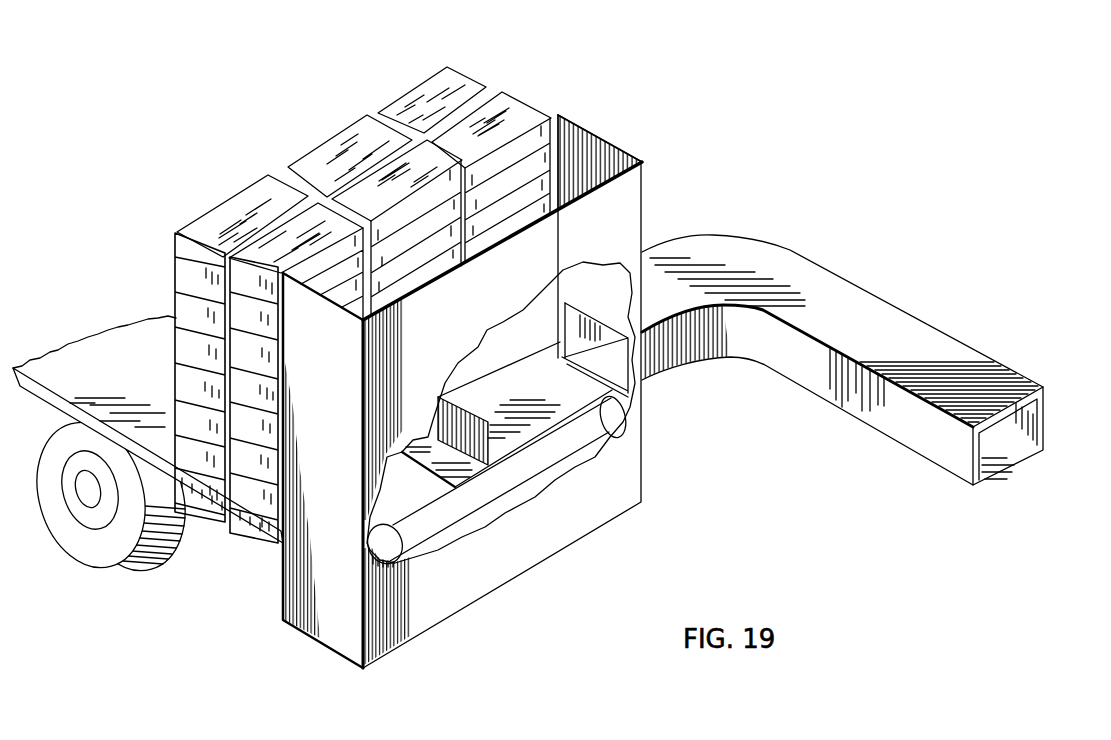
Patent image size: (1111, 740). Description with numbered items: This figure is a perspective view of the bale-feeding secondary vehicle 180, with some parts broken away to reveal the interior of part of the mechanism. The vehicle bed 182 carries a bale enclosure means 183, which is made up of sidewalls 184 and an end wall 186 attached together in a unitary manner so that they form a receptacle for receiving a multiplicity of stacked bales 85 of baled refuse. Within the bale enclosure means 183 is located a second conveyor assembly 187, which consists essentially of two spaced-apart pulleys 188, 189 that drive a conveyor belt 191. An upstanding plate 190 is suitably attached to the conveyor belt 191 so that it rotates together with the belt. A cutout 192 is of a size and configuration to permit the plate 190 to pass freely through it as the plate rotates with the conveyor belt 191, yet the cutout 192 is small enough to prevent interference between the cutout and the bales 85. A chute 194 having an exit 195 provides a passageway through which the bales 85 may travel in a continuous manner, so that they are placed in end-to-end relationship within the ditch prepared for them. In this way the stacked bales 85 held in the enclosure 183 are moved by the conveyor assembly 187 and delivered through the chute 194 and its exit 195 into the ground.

The bale transporting apparatus 180 is at (557, 347).
The stacked bales 85 is at (524, 109).
The vehicle bed 182 is at (266, 529).
The bale enclosure means 183 is at (487, 387).
The sidewalls 184 is at (594, 132).
The end wall 186 is at (489, 585).
The second conveyor assembly 187 is at (497, 485).
The pulley 188 is at (392, 540).
The pulley 189 is at (618, 423).
The upstanding plate 190 is at (447, 393).
The conveyor belt 191 is at (478, 512).
The cutout 192 is at (571, 369).
The chute 194 is at (871, 360).
The exit 195 is at (1046, 426).